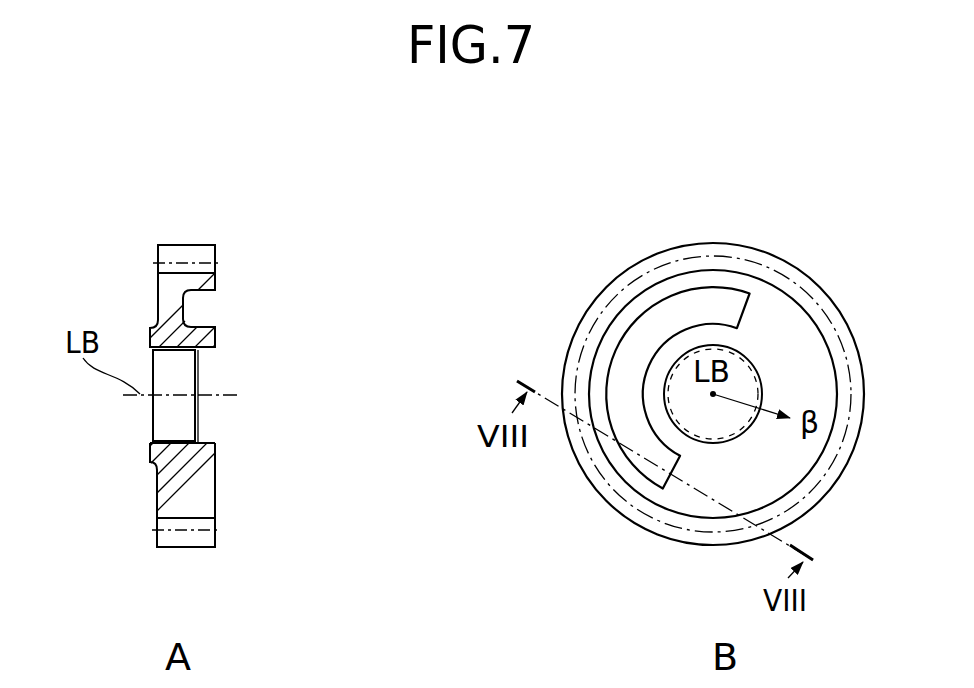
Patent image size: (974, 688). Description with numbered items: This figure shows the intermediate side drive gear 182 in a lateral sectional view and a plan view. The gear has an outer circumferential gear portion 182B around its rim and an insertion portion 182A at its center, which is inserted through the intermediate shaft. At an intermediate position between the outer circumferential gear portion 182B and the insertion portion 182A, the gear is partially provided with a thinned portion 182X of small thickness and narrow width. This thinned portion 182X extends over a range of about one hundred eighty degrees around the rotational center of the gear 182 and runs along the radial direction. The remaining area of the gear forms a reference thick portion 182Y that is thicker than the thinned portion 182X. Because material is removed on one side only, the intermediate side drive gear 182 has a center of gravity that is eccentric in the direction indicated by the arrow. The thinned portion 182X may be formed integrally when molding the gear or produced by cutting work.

The intermediate side drive gear 182 is at (207, 240).
The thinned portion 182X is at (204, 298).
The insertion portion 182A is at (217, 338).
The reference thick portion 182Y is at (217, 461).
The outer circumferential gear portion 182B is at (217, 546).